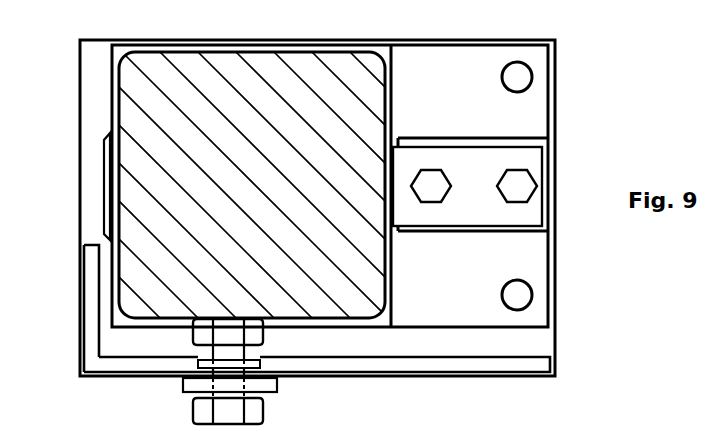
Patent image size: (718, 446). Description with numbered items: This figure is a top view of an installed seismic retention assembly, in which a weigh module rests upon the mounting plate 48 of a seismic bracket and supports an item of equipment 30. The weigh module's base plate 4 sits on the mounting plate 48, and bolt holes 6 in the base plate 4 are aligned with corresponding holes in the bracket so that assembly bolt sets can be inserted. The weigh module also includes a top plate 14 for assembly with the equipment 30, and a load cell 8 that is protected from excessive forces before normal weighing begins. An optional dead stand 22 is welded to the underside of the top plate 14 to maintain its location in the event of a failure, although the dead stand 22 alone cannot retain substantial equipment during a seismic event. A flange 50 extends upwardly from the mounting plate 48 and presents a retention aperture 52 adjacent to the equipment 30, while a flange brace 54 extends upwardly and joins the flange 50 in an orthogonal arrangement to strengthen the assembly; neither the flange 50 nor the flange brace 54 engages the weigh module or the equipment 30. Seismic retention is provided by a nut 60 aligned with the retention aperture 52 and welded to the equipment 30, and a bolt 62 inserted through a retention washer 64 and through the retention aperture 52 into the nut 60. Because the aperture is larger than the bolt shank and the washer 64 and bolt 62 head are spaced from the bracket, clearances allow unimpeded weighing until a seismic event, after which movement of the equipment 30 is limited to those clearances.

The base plate 4 is at (548, 329).
The bolt holes 6 is at (502, 74).
The load cell 8 is at (460, 138).
The top plate 14 is at (392, 84).
The dead stand 22 is at (104, 186).
The item of equipment 30 is at (325, 52).
The mounting plate 48 is at (81, 77).
The flange 50 is at (465, 357).
The retention aperture 52 is at (198, 362).
The flange brace 54 is at (87, 308).
The nut 60 is at (264, 332).
The bolt 62 is at (264, 420).
The retention washer 64 is at (277, 389).